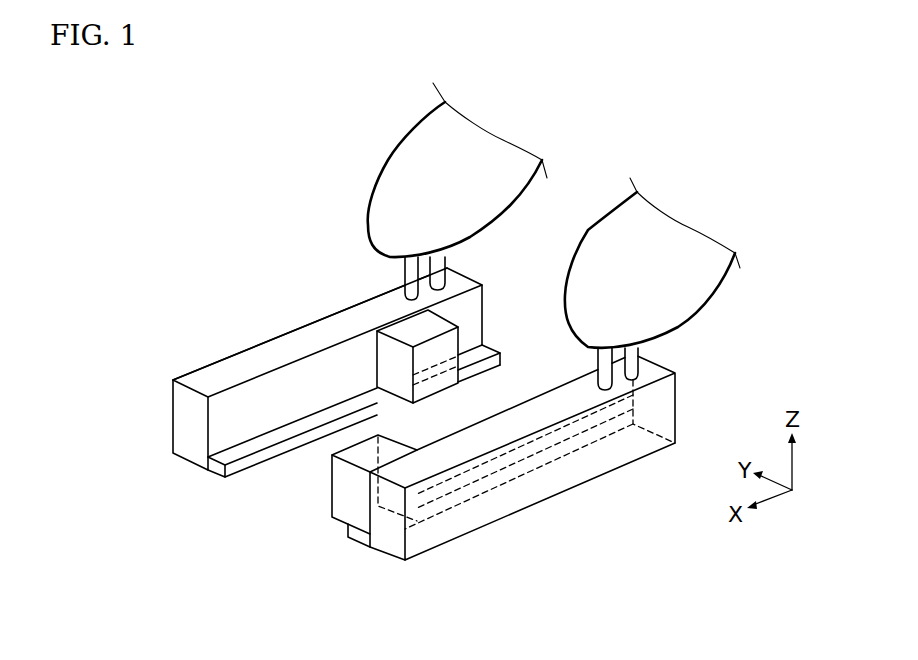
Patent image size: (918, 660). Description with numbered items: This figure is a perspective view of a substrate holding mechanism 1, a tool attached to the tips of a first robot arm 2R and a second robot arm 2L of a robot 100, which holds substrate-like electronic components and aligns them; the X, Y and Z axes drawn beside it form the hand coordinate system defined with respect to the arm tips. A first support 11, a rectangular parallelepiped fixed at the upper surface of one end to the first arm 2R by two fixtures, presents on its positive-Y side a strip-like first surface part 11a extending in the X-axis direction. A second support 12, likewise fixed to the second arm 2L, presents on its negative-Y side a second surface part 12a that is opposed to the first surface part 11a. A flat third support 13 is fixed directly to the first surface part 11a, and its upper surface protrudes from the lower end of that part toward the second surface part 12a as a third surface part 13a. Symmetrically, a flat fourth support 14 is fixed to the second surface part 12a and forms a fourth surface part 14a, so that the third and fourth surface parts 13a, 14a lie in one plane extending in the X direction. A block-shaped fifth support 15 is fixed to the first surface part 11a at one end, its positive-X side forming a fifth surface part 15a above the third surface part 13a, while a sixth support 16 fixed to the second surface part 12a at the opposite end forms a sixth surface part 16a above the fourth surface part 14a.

The robot 100 is at (743, 95).
The substrate holding mechanism 1 is at (143, 318).
The first robot arm 2R is at (403, 129).
The second robot arm 2L is at (593, 228).
The first support 11 is at (275, 337).
The first surface part 11a is at (320, 377).
The second support 12 is at (562, 480).
The second surface part 12a is at (547, 413).
The third support 13 is at (252, 467).
The third surface part 13a is at (260, 438).
The fourth support 14 is at (347, 537).
The fourth surface part 14a is at (466, 480).
The fifth support 15 is at (432, 312).
The fifth surface part 15a is at (390, 363).
The sixth support 16 is at (332, 490).
The sixth surface part 16a is at (415, 478).